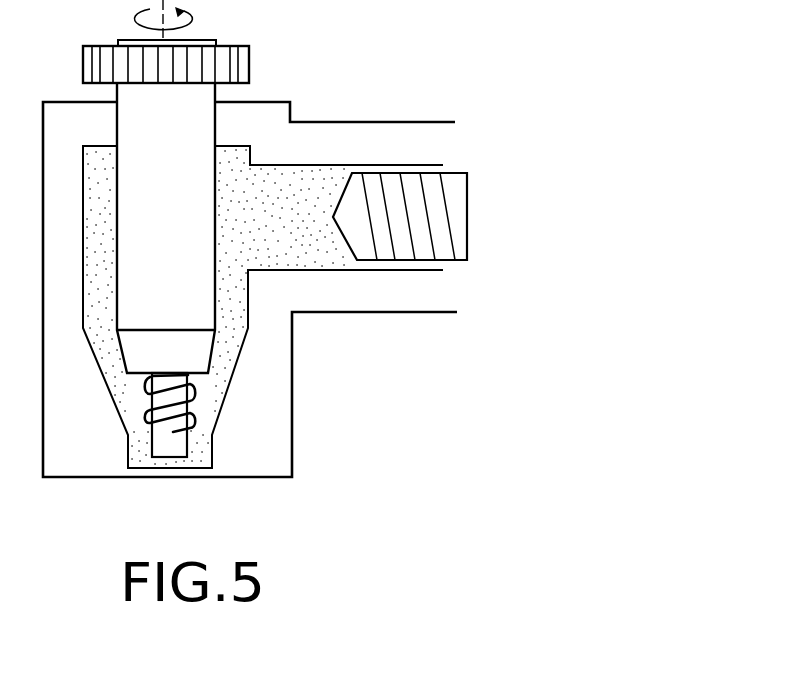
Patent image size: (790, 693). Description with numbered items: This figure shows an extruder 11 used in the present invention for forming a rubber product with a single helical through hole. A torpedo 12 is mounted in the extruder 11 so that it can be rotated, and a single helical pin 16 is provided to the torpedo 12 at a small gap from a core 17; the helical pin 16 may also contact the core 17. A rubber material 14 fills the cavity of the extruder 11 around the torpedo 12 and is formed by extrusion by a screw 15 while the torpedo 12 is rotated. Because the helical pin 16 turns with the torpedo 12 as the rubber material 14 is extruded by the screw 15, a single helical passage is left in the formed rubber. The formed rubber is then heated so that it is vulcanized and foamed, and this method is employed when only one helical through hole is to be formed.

The extruder 11 is at (272, 91).
The torpedo 12 is at (202, 352).
The rubber material 14 is at (287, 182).
The screw 15 is at (438, 227).
The helical pin 16 is at (193, 403).
The core 17 is at (170, 443).